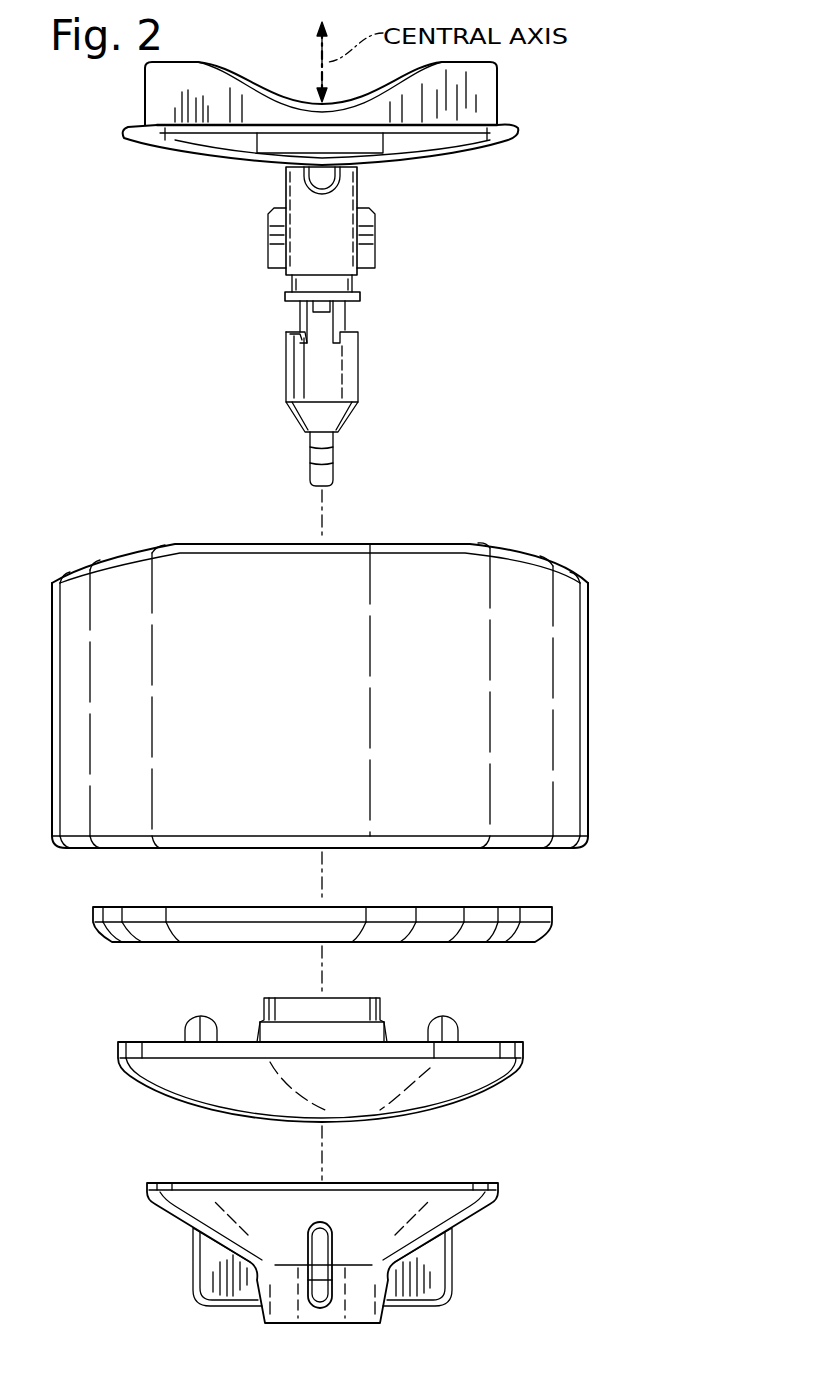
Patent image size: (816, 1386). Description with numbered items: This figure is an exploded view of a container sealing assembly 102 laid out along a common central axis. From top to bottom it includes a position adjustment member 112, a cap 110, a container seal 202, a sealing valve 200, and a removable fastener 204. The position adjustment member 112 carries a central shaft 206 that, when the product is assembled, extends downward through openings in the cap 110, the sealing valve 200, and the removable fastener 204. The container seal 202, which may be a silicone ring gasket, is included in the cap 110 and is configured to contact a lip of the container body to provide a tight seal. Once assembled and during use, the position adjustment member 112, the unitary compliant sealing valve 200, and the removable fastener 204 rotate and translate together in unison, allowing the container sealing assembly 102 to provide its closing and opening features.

The container sealing assembly 102 is at (648, 90).
The position adjustment member 112 is at (343, 490).
The central shaft 206 is at (265, 168).
The cap 110 is at (517, 541).
The container seal 202 is at (552, 898).
The sealing valve 200 is at (408, 1125).
The removable fastener 204 is at (412, 1327).